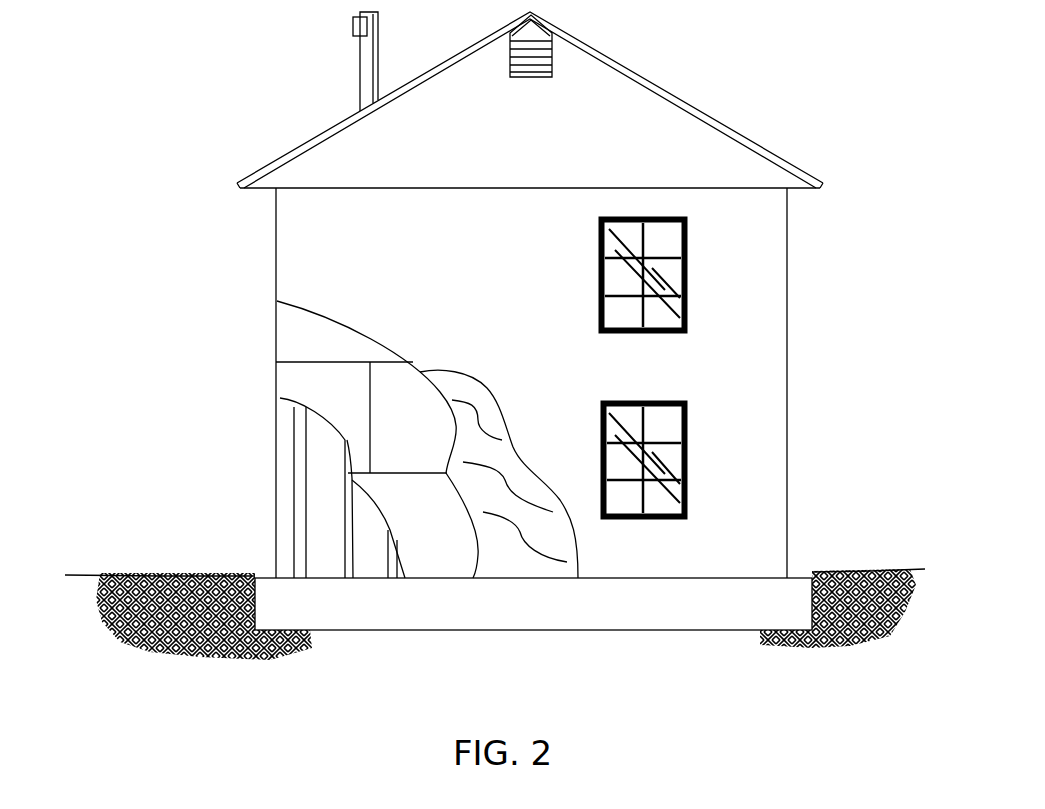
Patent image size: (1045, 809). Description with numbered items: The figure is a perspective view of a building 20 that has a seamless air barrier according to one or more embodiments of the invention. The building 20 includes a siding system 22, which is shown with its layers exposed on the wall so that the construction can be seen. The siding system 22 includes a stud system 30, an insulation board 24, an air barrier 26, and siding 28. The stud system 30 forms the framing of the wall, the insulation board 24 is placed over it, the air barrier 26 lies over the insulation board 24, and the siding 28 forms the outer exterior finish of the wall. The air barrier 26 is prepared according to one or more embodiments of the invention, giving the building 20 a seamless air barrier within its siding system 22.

The building 20 is at (158, 121).
The siding system 22 is at (790, 269).
The insulation board 24 is at (318, 338).
The air barrier 26 is at (552, 533).
The siding 28 is at (740, 352).
The stud system 30 is at (317, 498).